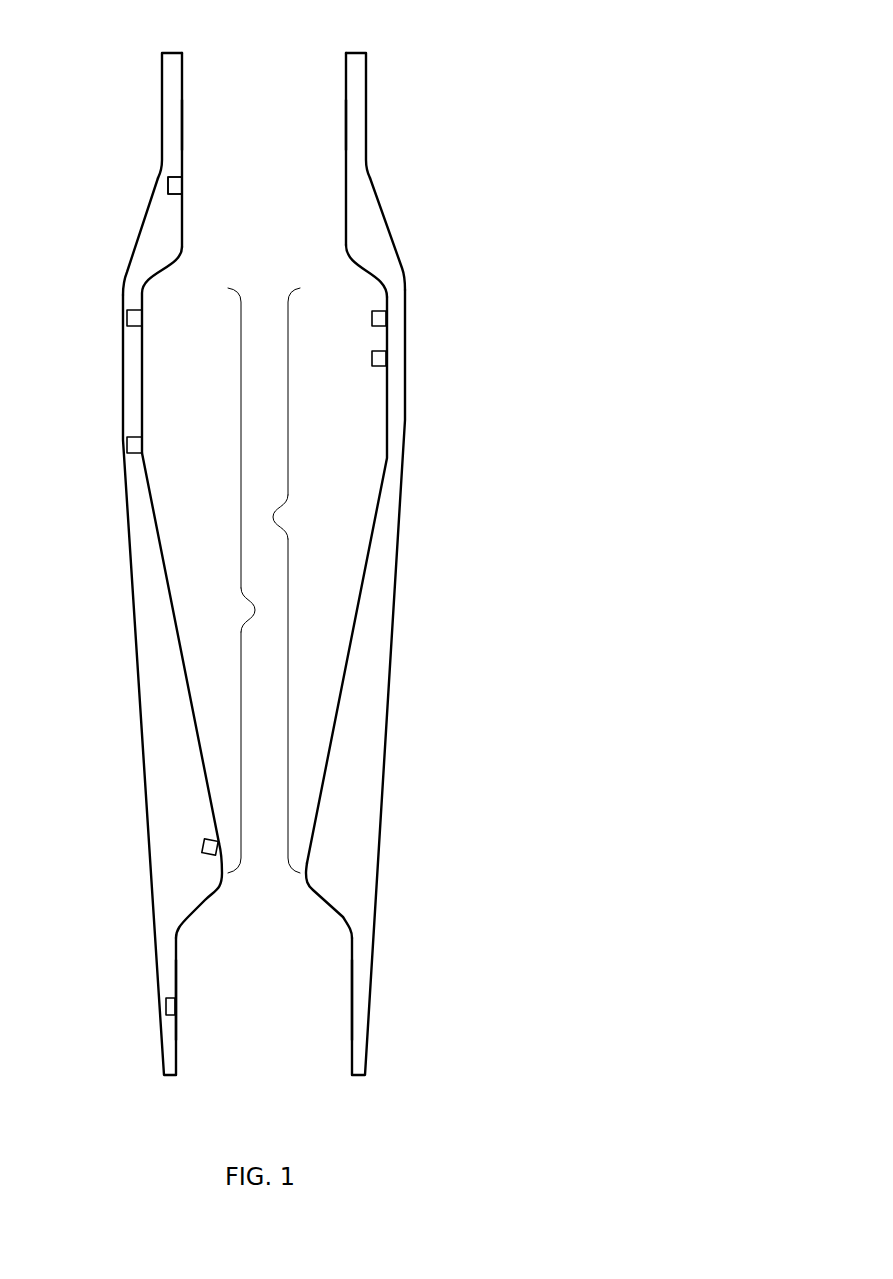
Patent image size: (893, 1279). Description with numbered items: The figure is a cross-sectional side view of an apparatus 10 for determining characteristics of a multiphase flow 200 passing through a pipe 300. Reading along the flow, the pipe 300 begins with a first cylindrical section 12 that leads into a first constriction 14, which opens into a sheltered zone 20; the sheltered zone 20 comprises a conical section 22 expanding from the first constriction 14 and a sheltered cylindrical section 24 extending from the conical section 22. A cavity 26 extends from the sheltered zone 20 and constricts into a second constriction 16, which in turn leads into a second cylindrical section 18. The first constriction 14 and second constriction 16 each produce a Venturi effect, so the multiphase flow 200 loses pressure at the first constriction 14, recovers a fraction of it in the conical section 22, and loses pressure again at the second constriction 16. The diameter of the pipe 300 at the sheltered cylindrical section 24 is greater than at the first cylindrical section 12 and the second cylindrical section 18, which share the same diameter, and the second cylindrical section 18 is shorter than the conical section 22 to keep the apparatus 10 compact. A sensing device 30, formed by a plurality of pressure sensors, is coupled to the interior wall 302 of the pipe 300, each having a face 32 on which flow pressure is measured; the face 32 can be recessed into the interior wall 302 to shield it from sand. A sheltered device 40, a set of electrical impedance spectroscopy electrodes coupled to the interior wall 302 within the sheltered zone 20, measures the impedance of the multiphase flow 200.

The apparatus 10 is at (485, 73).
The first cylindrical section 12 is at (267, 964).
The first constriction 14 is at (263, 893).
The second constriction 16 is at (260, 200).
The second cylindrical section 18 is at (257, 129).
The sheltered zone 20 is at (273, 517).
The conical section 22 is at (255, 734).
The sheltered cylindrical section 24 is at (248, 424).
The cavity 26 is at (245, 257).
The sensing device 30 is at (158, 183).
The face 32 is at (185, 188).
The sheltered device 40 is at (370, 316).
The multiphase flow 200 is at (262, 1025).
The pipe 300 is at (125, 564).
The interior wall 302 is at (172, 583).